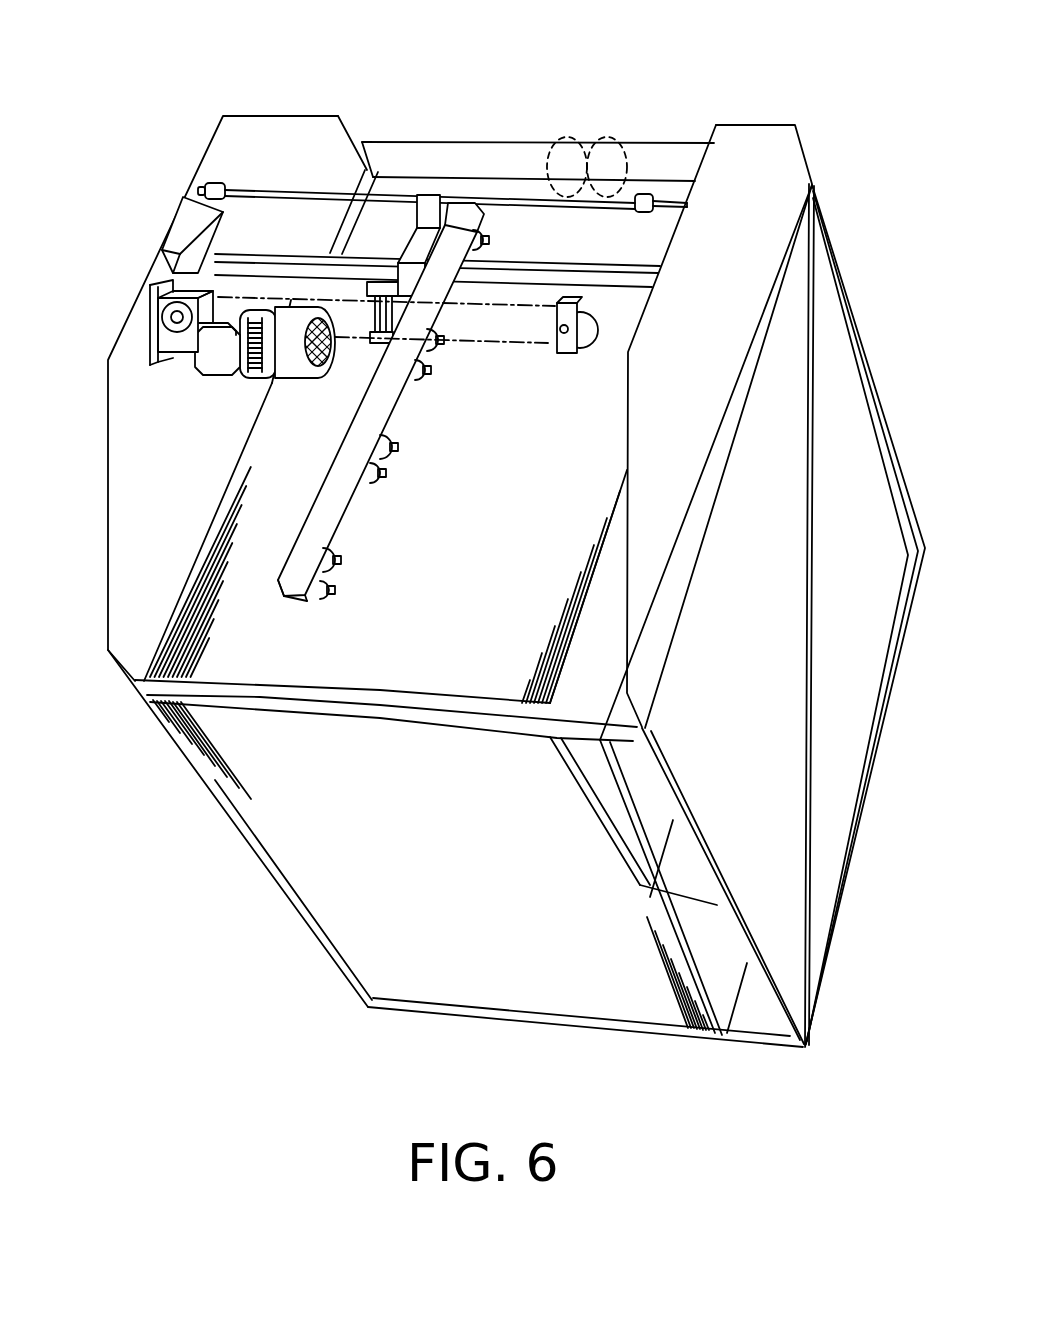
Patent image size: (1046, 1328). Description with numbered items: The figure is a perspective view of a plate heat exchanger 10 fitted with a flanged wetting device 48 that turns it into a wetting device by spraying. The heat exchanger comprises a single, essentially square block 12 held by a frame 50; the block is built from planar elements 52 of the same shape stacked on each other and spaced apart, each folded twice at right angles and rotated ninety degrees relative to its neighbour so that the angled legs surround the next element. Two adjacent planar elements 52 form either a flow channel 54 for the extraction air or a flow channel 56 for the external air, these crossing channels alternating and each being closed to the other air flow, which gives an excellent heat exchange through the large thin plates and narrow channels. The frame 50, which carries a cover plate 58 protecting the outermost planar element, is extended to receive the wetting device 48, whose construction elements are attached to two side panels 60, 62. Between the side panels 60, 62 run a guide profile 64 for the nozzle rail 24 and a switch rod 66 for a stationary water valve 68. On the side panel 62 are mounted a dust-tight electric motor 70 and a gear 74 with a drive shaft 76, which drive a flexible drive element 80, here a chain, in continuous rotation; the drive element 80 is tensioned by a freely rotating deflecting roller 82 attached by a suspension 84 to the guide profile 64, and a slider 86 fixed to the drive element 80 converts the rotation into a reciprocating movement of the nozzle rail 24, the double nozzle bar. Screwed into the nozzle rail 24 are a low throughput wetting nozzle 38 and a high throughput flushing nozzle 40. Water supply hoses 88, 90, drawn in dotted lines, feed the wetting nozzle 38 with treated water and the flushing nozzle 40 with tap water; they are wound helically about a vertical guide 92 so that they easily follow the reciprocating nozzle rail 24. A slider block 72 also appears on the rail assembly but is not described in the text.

The plate heat exchanger 10 is at (484, 587).
The block 12 is at (508, 901).
The nozzle rail 24 is at (287, 600).
The wetting nozzle 38 is at (362, 481).
The flushing nozzle 40 is at (390, 465).
The wetting device 48 is at (388, 334).
The frame 50 is at (795, 1040).
The planar elements 52 is at (690, 1022).
The flow channel for extraction air 54 is at (165, 645).
The flow channel for external air 56 is at (182, 719).
The cover plate 58 is at (722, 1003).
The side panel 60 is at (776, 143).
The side panel 62 is at (122, 590).
The guide profile 64 is at (643, 282).
The switch rod 66 is at (525, 198).
The water valve 68 is at (190, 235).
The electric motor 70 is at (293, 378).
The slider block 72 is at (428, 207).
The gear 74 is at (162, 352).
The drive shaft 76 is at (175, 314).
The flexible drive element 80 is at (510, 343).
The deflecting roller 82 is at (590, 350).
The suspension 84 is at (565, 355).
The slider 86 is at (383, 343).
The water supply hose 88 is at (566, 137).
The water supply hose 90 is at (610, 137).
The vertical guide 92 is at (657, 160).